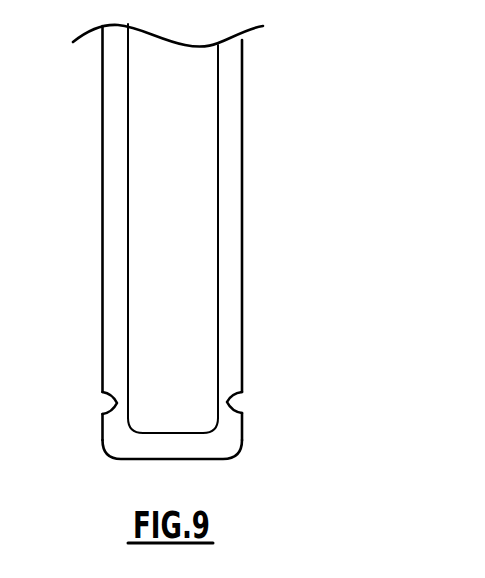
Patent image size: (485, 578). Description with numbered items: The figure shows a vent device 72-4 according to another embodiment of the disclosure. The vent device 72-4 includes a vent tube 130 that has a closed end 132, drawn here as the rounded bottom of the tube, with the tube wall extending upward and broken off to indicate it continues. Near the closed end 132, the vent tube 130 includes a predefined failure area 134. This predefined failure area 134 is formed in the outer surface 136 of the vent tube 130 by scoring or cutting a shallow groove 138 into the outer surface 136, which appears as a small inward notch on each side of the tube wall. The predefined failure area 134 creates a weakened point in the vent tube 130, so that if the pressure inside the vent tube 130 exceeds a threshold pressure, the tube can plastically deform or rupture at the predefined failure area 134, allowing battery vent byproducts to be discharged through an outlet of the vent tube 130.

The vent device 72-4 is at (284, 167).
The vent tube 130 is at (228, 233).
The outer surface 136 is at (242, 303).
The closed end 132 is at (185, 443).
The shallow groove 138 is at (117, 403).
The predefined failure area 134 is at (237, 401).